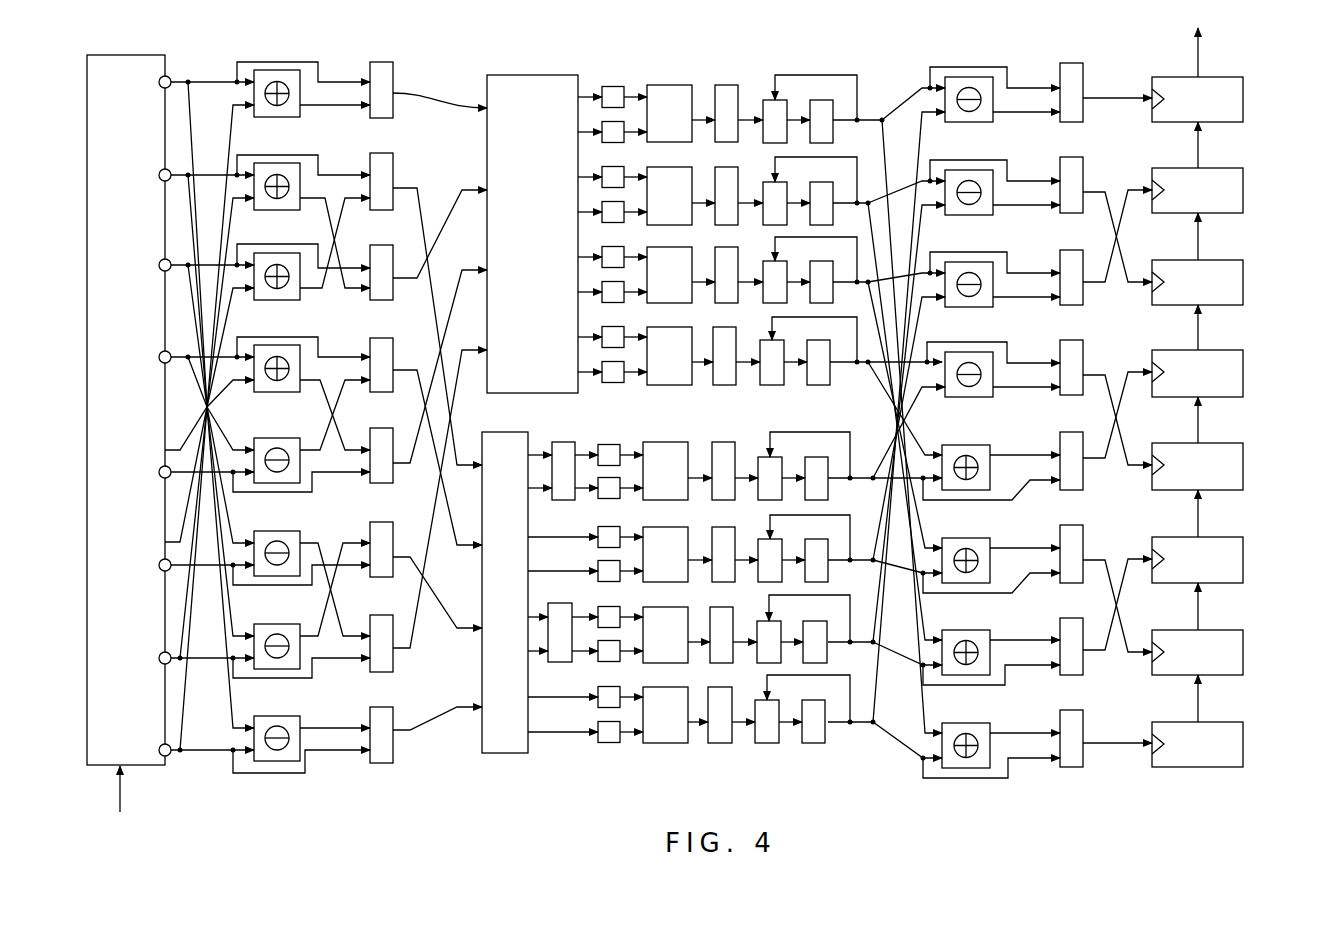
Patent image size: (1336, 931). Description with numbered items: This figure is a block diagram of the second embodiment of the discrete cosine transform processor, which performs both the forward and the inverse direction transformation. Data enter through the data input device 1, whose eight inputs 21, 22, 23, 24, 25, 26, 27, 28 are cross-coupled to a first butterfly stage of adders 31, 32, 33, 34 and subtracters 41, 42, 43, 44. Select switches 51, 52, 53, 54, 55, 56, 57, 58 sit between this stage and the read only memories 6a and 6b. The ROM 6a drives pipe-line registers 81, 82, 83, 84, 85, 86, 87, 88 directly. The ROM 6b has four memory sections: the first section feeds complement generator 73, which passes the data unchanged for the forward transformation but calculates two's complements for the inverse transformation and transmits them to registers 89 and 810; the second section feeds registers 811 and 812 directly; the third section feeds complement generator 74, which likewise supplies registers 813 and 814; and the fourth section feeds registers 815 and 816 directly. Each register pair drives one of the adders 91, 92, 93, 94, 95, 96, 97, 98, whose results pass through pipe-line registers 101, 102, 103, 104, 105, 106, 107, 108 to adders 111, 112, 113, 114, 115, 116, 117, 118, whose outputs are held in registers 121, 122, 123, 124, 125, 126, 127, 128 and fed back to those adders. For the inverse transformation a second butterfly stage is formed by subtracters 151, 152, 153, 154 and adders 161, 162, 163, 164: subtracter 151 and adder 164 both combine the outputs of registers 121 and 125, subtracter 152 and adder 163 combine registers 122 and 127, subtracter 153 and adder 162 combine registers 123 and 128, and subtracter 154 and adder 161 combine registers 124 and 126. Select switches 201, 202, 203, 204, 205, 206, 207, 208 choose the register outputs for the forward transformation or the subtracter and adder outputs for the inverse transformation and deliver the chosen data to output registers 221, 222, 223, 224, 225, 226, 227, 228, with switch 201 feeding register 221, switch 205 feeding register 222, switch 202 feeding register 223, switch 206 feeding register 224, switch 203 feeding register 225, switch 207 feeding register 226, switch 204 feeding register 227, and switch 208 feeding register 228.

The data input device 1 is at (124, 55).
The input terminal 21 is at (169, 76).
The input terminal 22 is at (168, 169).
The input terminal 23 is at (168, 259).
The input terminal 24 is at (168, 351).
The input terminal 25 is at (167, 478).
The input terminal 26 is at (167, 571).
The input terminal 27 is at (167, 664).
The input terminal 28 is at (167, 756).
The adder 31 is at (283, 117).
The adder 32 is at (283, 210).
The adder 33 is at (283, 300).
The adder 34 is at (272, 392).
The subtracter 41 is at (268, 438).
The subtracter 42 is at (278, 515).
The subtracter 43 is at (268, 624).
The subtracter 44 is at (268, 716).
The select switch 51 is at (385, 74).
The select switch 52 is at (383, 165).
The select switch 53 is at (380, 257).
The select switch 54 is at (381, 350).
The selector 55 is at (381, 440).
The selector 56 is at (381, 534).
The selector 57 is at (376, 627).
The selector 58 is at (383, 719).
The read only memory 6a is at (540, 76).
The read only memory 6b is at (494, 434).
The complement generator 73 is at (565, 442).
The complement generator 74 is at (562, 592).
The pipe-line register 81 is at (608, 86).
The pipe-line register 82 is at (610, 121).
The pipe-line register 83 is at (610, 166).
The pipe-line register 84 is at (610, 201).
The pipe-line register 85 is at (610, 246).
The pipe-line register 86 is at (619, 272).
The pipe-line register 87 is at (610, 326).
The pipe-line register 88 is at (619, 352).
The pipe-line register 89 is at (606, 444).
The pipe-line register 810 is at (615, 468).
The pipe-line register 811 is at (606, 526).
The pipe-line register 812 is at (615, 550).
The pipe-line register 813 is at (606, 606).
The pipe-line register 814 is at (615, 630).
The pipe-line register 815 is at (606, 686).
The pipe-line register 816 is at (608, 743).
The adder 91 is at (660, 85).
The adder 92 is at (665, 167).
The adder 93 is at (665, 247).
The adder 94 is at (665, 327).
The adder 95 is at (658, 442).
The adder 96 is at (660, 527).
The adder 97 is at (660, 607).
The adder 98 is at (660, 687).
The pipe-line register 101 is at (725, 85).
The pipe-line register 102 is at (731, 153).
The pipe-line register 103 is at (733, 233).
The pipe-line register 104 is at (730, 313).
The pipe-line register 105 is at (722, 442).
The pipe-line register 106 is at (730, 513).
The pipe-line register 107 is at (728, 593).
The pipe-line register 108 is at (718, 687).
The adder 111 is at (781, 88).
The adder 112 is at (781, 170).
The adder 113 is at (781, 249).
The adder 114 is at (778, 328).
The adder 115 is at (776, 445).
The adder 116 is at (776, 527).
The adder 117 is at (775, 609).
The adder 118 is at (773, 688).
The register 121 is at (826, 88).
The register 122 is at (826, 170).
The register 123 is at (826, 249).
The register 124 is at (823, 328).
The register 125 is at (821, 445).
The register 126 is at (821, 527).
The register 127 is at (819, 609).
The register 128 is at (818, 688).
The subtracter 151 is at (985, 122).
The subtracter 152 is at (985, 215).
The subtracter 153 is at (985, 307).
The subtracter 154 is at (985, 397).
The adder 161 is at (975, 445).
The adder 162 is at (967, 520).
The adder 163 is at (964, 612).
The adder 164 is at (961, 705).
The select switch 201 is at (1078, 75).
The select switch 202 is at (1078, 168).
The select switch 203 is at (1072, 262).
The select switch 204 is at (1072, 352).
The select switch 205 is at (1072, 444).
The select switch 206 is at (1070, 537).
The select switch 207 is at (1070, 630).
The select switch 208 is at (1070, 722).
The output register 221 is at (1243, 94).
The output register 222 is at (1243, 185).
The output register 223 is at (1243, 277).
The output register 224 is at (1243, 367).
The output register 225 is at (1243, 460).
The output register 226 is at (1243, 554).
The output register 227 is at (1243, 647).
The output register 228 is at (1243, 739).